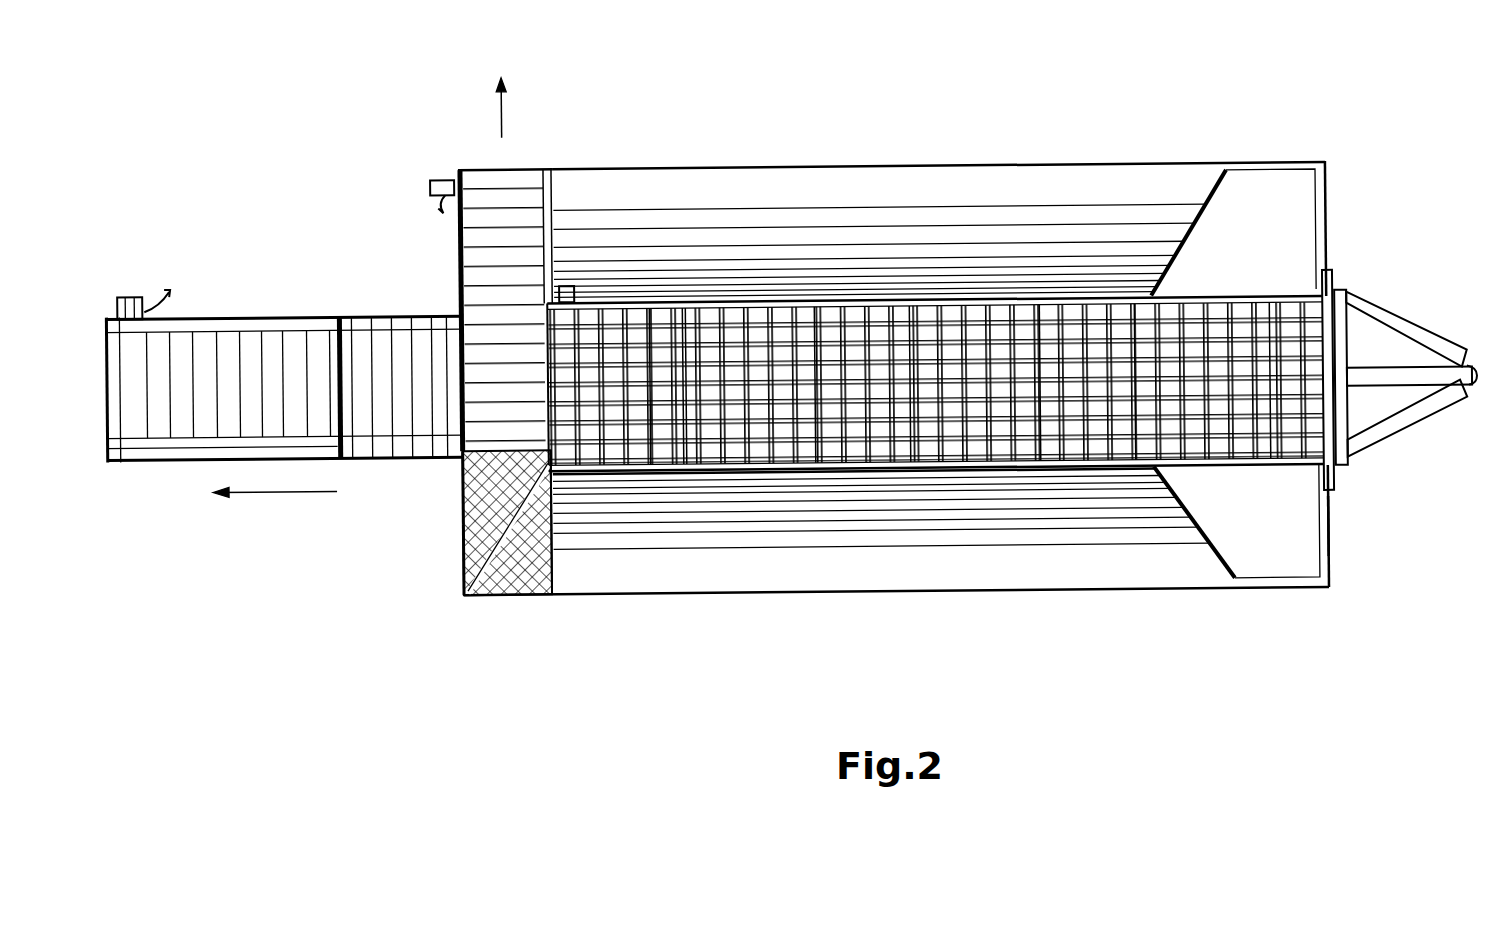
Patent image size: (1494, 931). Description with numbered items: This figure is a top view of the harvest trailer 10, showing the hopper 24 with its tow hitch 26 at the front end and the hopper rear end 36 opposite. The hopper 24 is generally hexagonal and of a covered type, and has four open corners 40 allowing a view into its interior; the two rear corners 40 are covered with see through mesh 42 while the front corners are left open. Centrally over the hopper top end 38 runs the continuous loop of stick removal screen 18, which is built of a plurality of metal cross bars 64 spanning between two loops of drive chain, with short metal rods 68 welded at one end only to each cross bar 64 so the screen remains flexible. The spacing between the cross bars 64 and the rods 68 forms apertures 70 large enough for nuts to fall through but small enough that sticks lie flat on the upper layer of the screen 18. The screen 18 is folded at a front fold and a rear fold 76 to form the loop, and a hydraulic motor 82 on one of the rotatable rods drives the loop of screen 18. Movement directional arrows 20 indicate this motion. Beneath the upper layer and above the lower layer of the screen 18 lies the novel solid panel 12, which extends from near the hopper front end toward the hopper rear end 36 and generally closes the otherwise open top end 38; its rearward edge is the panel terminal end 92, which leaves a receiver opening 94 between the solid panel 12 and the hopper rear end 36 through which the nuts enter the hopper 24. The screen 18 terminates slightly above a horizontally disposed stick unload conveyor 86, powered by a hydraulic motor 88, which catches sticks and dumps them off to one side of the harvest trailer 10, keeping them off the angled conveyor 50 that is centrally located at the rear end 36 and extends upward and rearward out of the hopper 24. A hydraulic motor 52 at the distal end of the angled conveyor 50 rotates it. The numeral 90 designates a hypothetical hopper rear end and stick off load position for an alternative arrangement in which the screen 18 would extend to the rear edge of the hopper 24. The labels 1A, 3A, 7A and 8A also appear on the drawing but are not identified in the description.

The harvest trailer 10 is at (872, 157).
The solid panel 12 is at (689, 443).
The slat conveyor section 1A is at (1006, 313).
The frame section 3A is at (1331, 536).
The end plate 7A is at (1336, 291).
The bearing plate 8A is at (1341, 331).
The stick removal screen 18 is at (959, 456).
The movement directional arrows 20 is at (511, 108).
The hopper 24 is at (766, 561).
The tow hitch 26 is at (1419, 327).
The hopper rear end 36 is at (460, 561).
The hopper top end 38 is at (921, 298).
The open corners 40 is at (1267, 198).
The see through mesh 42 is at (538, 594).
The angled conveyor 50 is at (404, 457).
The hydraulic motor 52 is at (131, 291).
The metal cross bars 64 is at (1149, 452).
The short metal rods 68 is at (829, 449).
The apertures 70 is at (1062, 450).
The rear fold 76 is at (459, 513).
The hydraulic motor 82 is at (578, 285).
The stick unload conveyor 86 is at (515, 198).
The hydraulic motor 88 is at (432, 178).
The hypothetical hopper rear end and debris off load position 90 is at (546, 542).
The panel terminal end 92 is at (686, 303).
The receiver opening 94 is at (649, 443).